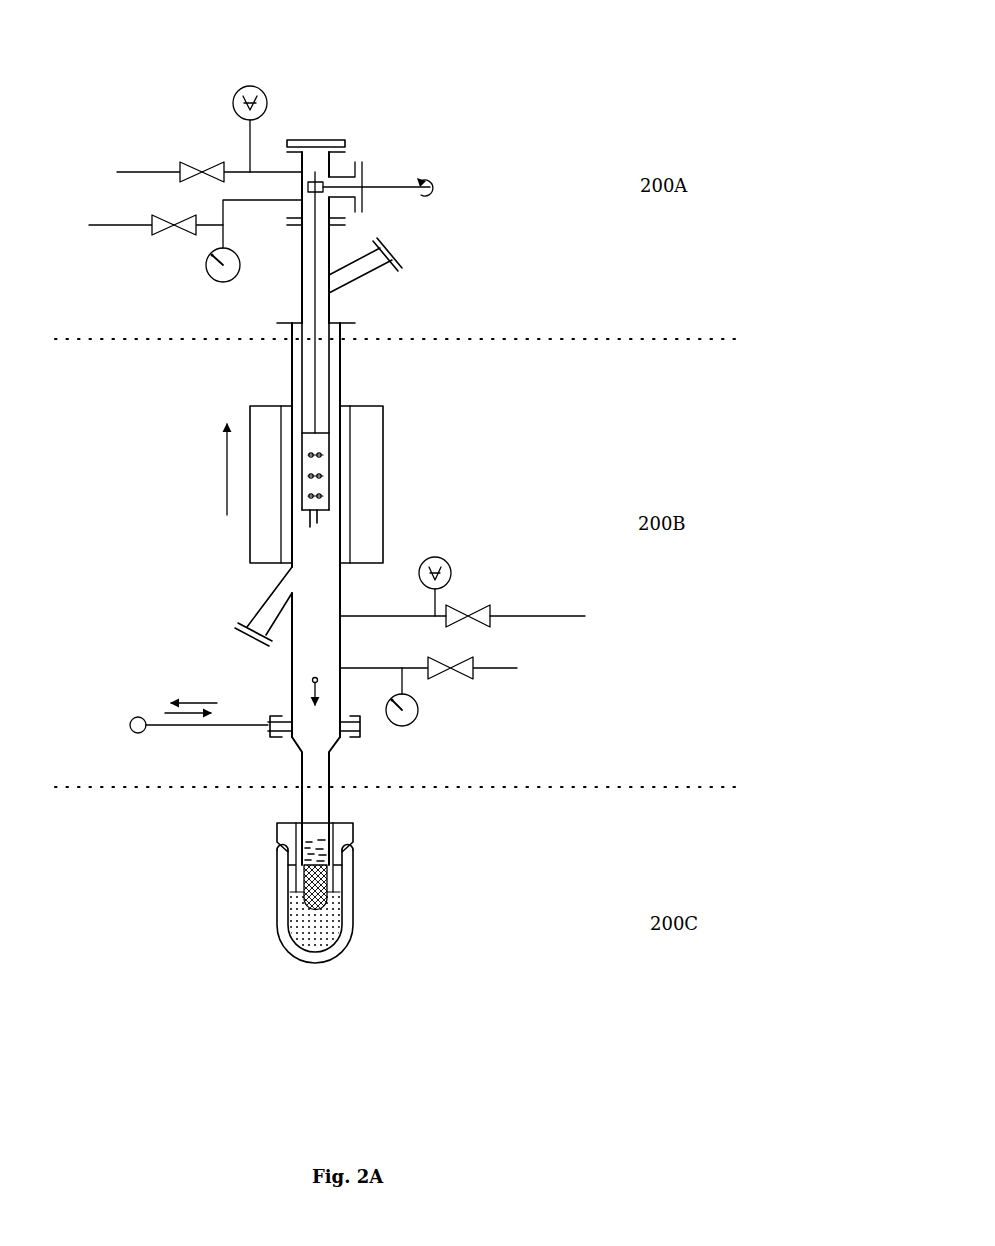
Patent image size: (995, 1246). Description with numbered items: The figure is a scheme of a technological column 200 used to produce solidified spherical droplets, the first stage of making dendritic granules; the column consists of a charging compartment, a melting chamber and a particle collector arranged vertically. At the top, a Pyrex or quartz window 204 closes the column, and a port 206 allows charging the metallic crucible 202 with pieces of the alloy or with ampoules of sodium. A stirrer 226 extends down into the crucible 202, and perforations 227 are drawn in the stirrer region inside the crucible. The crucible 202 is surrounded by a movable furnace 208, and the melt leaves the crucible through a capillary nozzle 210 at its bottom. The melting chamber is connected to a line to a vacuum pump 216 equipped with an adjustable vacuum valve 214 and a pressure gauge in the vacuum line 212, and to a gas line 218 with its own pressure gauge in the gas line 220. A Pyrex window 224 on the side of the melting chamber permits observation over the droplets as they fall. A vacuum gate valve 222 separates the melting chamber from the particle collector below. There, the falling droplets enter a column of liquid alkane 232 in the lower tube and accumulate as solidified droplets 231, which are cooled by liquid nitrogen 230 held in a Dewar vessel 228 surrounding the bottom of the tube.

The technological column 200 is at (318, 60).
The metallic crucible 202 is at (302, 270).
The Pyrex or quartz window 204 is at (317, 140).
The port 206 is at (365, 277).
The movable furnace 208 is at (383, 452).
The capillary nozzle 210 is at (320, 517).
The pressure gauge in a vacuum line 212 is at (452, 567).
The adjustable vacuum valve 214 is at (490, 610).
The line to a vacuum pump 216 is at (543, 616).
The gas line 218 is at (497, 668).
The pressure gauge in a gas line 220 is at (417, 705).
The vacuum gate valve 222 is at (275, 735).
The Pyrex window 224 is at (238, 633).
The stirrer 226 is at (308, 477).
The perforations 227 is at (302, 456).
The Dewar vessel 228 is at (354, 892).
The liquid nitrogen 230 is at (318, 935).
The solidified droplets 231 is at (303, 870).
The column of liquid alkane 232 is at (305, 843).